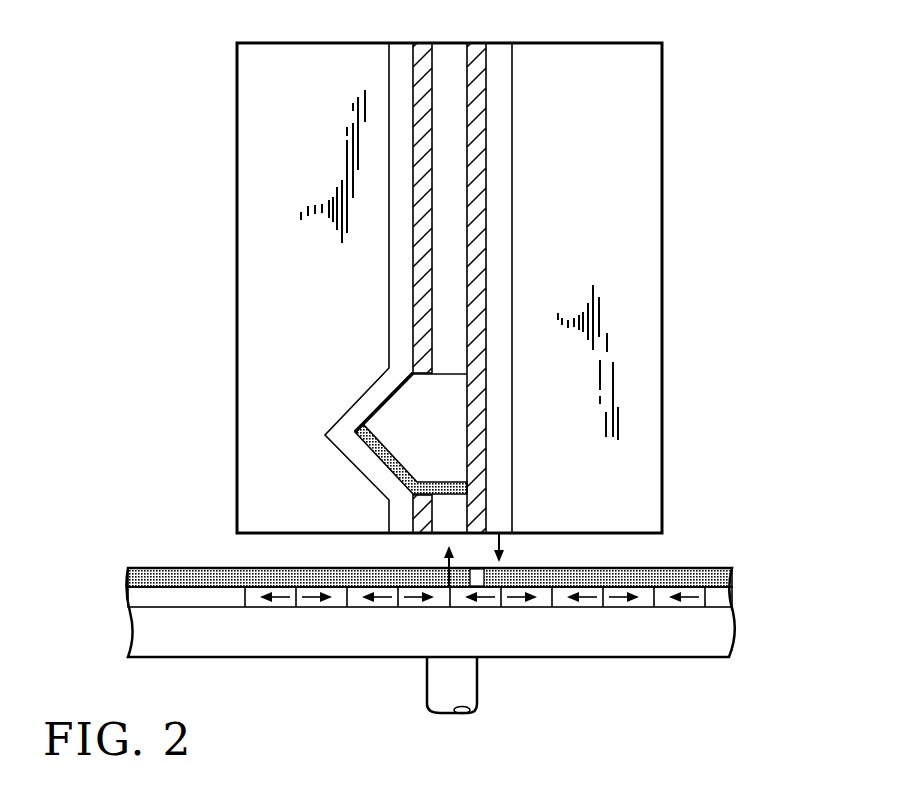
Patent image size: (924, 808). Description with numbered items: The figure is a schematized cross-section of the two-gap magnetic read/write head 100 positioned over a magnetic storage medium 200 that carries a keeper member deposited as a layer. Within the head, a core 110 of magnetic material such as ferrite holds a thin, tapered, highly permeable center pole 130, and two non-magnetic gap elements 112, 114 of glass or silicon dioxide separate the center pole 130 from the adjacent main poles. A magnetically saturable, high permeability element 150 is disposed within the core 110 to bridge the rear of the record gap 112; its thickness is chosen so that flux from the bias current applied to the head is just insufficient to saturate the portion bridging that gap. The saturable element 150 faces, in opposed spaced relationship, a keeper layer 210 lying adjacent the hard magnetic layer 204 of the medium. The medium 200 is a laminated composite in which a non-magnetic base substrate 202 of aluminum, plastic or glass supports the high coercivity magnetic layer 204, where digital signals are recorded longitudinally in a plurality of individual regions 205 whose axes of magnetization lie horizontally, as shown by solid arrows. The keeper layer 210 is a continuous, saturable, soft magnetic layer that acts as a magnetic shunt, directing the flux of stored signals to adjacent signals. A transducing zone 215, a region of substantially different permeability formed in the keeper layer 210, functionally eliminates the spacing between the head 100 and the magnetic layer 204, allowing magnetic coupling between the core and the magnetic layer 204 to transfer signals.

The two-gap magnetic read/write head 100 is at (676, 58).
The core 110 is at (642, 118).
The non-magnetic gap element 112 is at (423, 43).
The non-magnetic gap element 114 is at (477, 43).
The center pole 130 is at (456, 514).
The magnetically saturable, high permeability element 150 is at (388, 476).
The magnetic storage medium 200 is at (745, 634).
The base substrate 202 is at (187, 645).
The hard magnetic layer 204 is at (133, 597).
The individual regions 205 is at (685, 597).
The keeper layer 210 is at (680, 572).
The transducing zone 215 is at (481, 589).